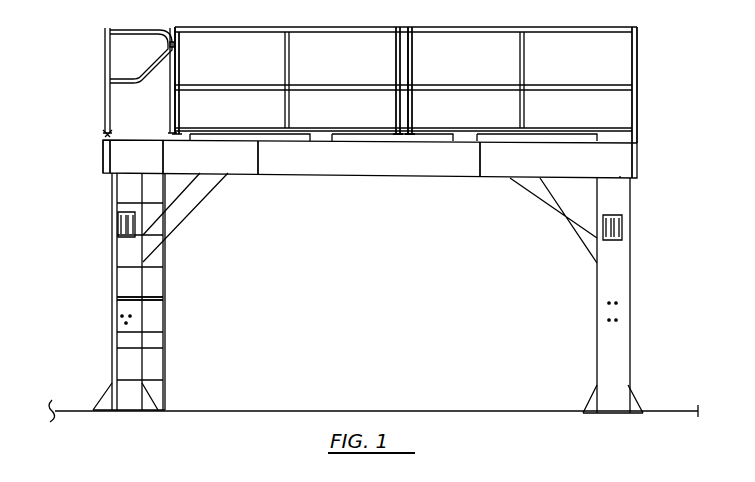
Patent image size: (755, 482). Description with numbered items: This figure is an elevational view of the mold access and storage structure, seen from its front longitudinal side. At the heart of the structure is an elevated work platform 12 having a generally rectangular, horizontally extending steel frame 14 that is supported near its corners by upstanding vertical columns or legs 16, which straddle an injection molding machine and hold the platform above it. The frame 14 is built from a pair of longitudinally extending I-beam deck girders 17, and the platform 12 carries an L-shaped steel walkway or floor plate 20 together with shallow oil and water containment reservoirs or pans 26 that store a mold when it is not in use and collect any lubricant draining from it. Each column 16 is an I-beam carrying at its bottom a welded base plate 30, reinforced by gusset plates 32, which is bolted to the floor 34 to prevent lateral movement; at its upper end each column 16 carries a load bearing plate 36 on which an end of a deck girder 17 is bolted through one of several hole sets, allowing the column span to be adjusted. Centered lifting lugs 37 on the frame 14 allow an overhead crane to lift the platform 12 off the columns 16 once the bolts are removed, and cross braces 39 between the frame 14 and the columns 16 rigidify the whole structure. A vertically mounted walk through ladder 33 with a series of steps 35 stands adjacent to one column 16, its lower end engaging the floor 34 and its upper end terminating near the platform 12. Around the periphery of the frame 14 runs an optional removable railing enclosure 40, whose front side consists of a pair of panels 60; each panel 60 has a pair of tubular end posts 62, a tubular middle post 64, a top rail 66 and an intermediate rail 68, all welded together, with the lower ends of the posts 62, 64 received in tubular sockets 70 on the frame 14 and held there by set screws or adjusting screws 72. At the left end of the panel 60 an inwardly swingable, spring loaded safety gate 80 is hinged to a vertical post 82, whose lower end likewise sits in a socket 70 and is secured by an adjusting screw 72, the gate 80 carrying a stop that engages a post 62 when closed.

The elevated work platform 12 is at (640, 158).
The steel frame 14 is at (103, 163).
The vertical columns or legs 16 is at (148, 287).
The I-beam deck girders 17 is at (358, 172).
The floor plate 20 is at (412, 137).
The oil and water containment reservoirs or pans 26 is at (333, 136).
The base plate 30 is at (101, 411).
The reinforcing gusset plates 32 is at (150, 395).
The walk through ladder 33 is at (114, 233).
The floor 34 is at (478, 417).
The steps 35 is at (150, 296).
The load bearing plate 36 is at (622, 178).
The lifting lugs 37 is at (262, 158).
The cross braces 39 is at (208, 202).
The removable railing enclosure 40 is at (437, 89).
The panels 60 is at (259, 29).
The tubular end posts 62 is at (182, 61).
The tubular middle post 64 is at (300, 61).
The top rail 66 is at (615, 30).
The intermediate rail 68 is at (548, 90).
The tubular sockets 70 is at (107, 136).
The set screw or adjusting screw 72 is at (400, 137).
The inwardly swingable gate 80 is at (116, 30).
The vertical post 82 is at (104, 83).